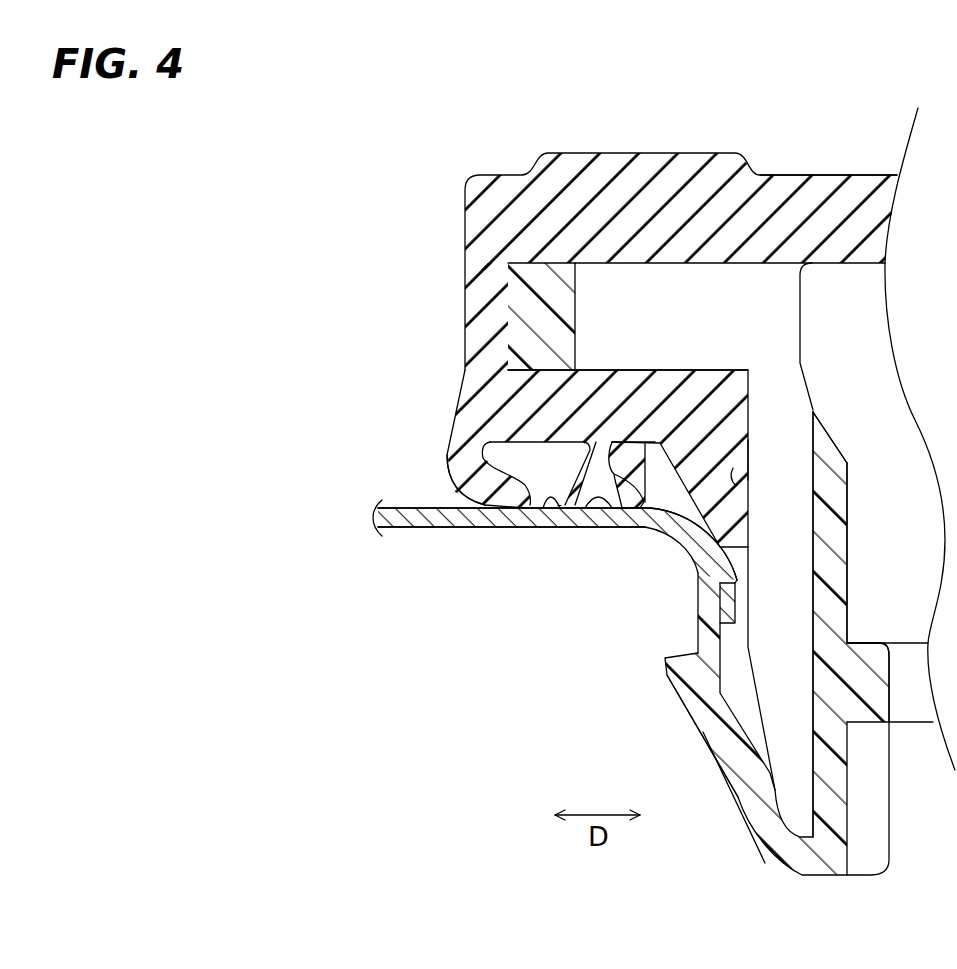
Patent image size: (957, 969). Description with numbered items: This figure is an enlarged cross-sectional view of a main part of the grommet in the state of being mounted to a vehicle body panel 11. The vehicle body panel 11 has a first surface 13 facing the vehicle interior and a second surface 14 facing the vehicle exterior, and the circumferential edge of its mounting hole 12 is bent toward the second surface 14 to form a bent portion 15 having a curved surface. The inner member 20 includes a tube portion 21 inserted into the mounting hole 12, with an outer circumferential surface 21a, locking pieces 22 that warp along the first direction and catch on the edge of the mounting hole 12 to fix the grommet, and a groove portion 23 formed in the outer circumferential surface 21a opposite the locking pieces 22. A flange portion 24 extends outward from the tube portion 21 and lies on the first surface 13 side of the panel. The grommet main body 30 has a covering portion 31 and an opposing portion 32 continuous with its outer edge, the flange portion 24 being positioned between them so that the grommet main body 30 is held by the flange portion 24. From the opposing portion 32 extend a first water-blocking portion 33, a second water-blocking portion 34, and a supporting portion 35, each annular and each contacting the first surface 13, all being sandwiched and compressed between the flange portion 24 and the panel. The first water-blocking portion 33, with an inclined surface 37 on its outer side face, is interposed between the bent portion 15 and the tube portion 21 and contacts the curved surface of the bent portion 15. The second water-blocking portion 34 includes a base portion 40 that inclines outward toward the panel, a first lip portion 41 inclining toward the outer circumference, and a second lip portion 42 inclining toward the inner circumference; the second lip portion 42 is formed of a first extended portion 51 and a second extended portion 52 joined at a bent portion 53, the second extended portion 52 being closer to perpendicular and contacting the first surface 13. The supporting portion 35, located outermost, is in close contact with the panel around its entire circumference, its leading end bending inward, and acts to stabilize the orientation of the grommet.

The vehicle body panel 11 is at (440, 528).
The mounting hole 12 is at (712, 578).
The first surface 13 is at (390, 506).
The second surface 14 is at (400, 528).
The bent portion 15 is at (700, 538).
The inner member 20 is at (752, 815).
The tube portion 21 is at (830, 548).
The outer circumferential surface 21a is at (745, 476).
The locking piece 22 is at (695, 710).
The groove portion 23 is at (810, 596).
The flange portion 24 is at (680, 295).
The grommet main body 30 is at (864, 176).
The covering portion 31 is at (790, 176).
The opposing portion 32 is at (598, 372).
The first water-blocking portion 33 is at (735, 508).
The second water-blocking portion 34 is at (540, 512).
The supporting portion 35 is at (470, 498).
The inclined surface 37 is at (733, 462).
The base portion 40 is at (590, 455).
The first lip portion 41 is at (560, 510).
The second lip portion 42 is at (625, 510).
The first extended portion 51 is at (613, 480).
The second extended portion 52 is at (673, 437).
The bent portion 53 is at (637, 447).